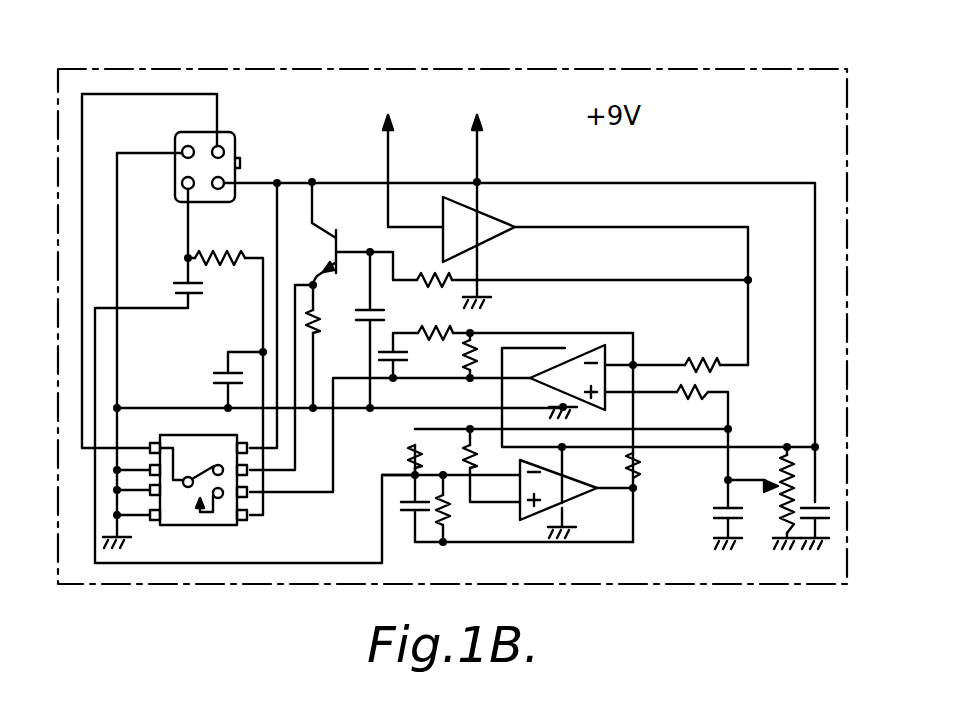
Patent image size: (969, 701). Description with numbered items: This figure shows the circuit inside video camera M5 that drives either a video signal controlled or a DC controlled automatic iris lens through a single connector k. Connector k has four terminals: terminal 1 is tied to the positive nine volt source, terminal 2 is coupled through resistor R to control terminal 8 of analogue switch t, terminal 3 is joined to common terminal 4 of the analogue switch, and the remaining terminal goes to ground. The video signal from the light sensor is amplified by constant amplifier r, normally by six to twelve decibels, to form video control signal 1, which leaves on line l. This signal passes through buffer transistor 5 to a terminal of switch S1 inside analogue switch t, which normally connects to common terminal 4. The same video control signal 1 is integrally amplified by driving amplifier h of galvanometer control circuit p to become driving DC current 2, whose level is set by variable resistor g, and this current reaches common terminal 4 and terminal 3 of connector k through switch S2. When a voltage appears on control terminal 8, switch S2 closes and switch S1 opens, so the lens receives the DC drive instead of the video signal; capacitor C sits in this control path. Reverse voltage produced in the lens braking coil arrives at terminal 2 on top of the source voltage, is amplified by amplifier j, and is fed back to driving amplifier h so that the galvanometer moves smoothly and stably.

The video camera M5 is at (655, 68).
The connector k is at (228, 132).
The video control signal 1 is at (226, 190).
The driving DC current 2 is at (182, 185).
The terminal of connector k 3 is at (232, 148).
The common terminal 4 is at (182, 150).
The buffer transistor 5 is at (353, 227).
The constant amplifier r is at (488, 220).
The line l is at (752, 244).
The driving amplifier h is at (580, 345).
The capacitor C is at (172, 282).
The resistor R is at (233, 266).
The switch terminal S1 is at (182, 480).
The switch terminal S2 is at (252, 508).
The control terminal 8 is at (249, 518).
The analogue switch t is at (193, 526).
The amplifier j is at (570, 490).
The galvanometer control circuit p is at (538, 546).
The variable resistor g is at (768, 500).